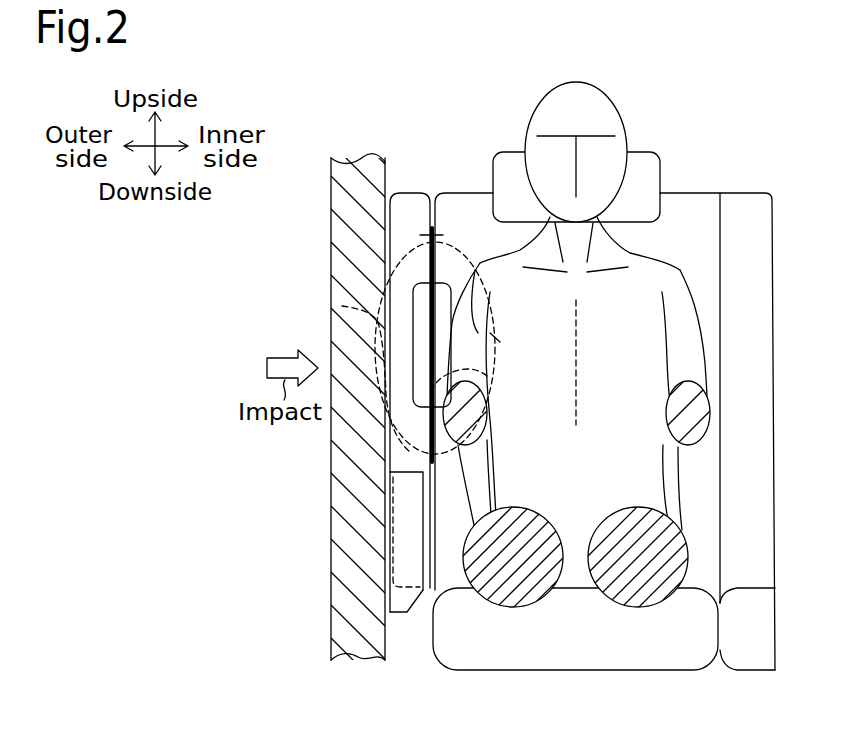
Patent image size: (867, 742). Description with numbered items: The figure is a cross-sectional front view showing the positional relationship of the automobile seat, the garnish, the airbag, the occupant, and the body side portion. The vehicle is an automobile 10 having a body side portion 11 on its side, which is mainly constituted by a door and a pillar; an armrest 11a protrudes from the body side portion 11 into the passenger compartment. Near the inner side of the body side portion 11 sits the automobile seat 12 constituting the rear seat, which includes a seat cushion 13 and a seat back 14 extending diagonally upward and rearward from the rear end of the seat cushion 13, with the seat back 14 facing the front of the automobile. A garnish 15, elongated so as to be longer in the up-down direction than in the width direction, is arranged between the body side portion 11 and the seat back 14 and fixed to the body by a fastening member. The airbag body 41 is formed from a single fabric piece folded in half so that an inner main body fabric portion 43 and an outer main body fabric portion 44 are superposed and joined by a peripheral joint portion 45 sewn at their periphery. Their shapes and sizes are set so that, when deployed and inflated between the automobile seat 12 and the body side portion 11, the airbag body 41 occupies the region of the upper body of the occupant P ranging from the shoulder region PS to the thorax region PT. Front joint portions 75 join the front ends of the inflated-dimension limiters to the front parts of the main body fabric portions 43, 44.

The automobile 10 is at (313, 208).
The body side portion 11 is at (330, 612).
The armrest 11a is at (402, 614).
The automobile seat 12 is at (731, 673).
The seat cushion 13 is at (573, 670).
The seat back 14 is at (693, 198).
The garnish 15 is at (413, 198).
The airbag body 41 is at (399, 262).
The main body fabric portion 43 is at (480, 277).
The main body fabric portion 44 is at (342, 306).
The peripheral joint portion 45 is at (437, 250).
The front joint portion 75 is at (487, 376).
The occupant P is at (600, 90).
The shoulder region PS is at (503, 250).
The thorax region PT is at (478, 266).